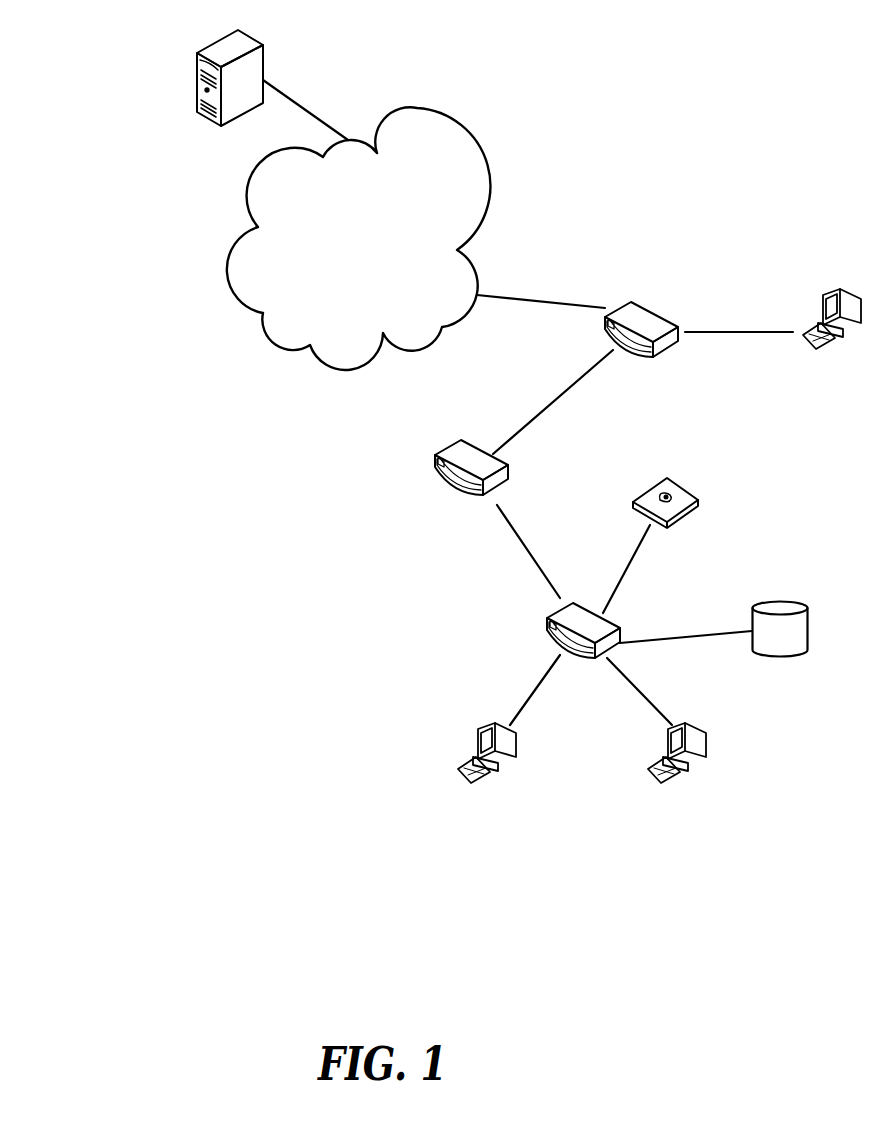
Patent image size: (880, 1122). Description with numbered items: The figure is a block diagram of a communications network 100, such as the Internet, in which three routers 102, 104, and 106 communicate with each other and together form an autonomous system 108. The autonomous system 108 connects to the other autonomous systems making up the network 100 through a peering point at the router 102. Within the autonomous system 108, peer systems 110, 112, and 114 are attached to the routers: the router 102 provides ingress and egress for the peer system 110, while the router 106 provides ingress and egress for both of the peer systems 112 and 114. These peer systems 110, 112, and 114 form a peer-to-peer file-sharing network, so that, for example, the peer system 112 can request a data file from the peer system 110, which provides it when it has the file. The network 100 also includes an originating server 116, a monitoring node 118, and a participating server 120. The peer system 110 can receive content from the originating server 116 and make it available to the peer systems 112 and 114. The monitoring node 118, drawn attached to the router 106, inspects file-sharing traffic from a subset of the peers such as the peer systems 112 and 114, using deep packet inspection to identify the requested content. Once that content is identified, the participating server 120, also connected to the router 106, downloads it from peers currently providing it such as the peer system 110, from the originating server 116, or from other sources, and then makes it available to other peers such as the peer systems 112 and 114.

The communications network 100 is at (170, 417).
The router 102 is at (648, 315).
The router 104 is at (511, 487).
The router 106 is at (557, 607).
The autonomous system 108 is at (687, 141).
The peer system 110 is at (827, 295).
The peer system 112 is at (482, 727).
The peer system 114 is at (670, 727).
The originating server 116 is at (213, 43).
The monitoring node 118 is at (752, 650).
The participating server 120 is at (695, 490).